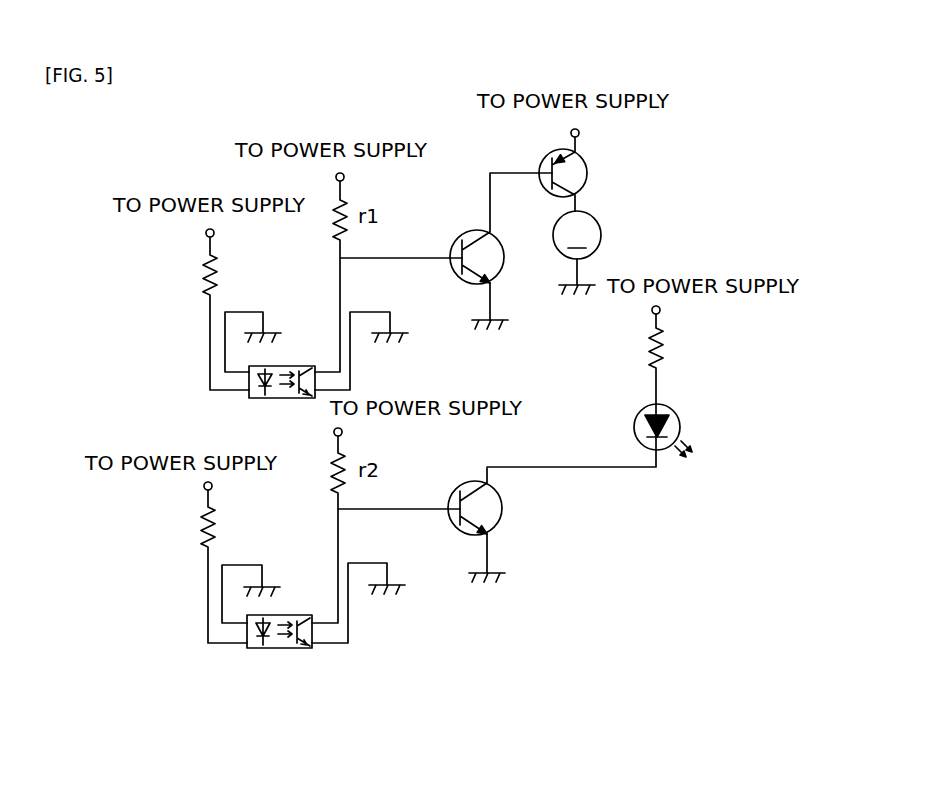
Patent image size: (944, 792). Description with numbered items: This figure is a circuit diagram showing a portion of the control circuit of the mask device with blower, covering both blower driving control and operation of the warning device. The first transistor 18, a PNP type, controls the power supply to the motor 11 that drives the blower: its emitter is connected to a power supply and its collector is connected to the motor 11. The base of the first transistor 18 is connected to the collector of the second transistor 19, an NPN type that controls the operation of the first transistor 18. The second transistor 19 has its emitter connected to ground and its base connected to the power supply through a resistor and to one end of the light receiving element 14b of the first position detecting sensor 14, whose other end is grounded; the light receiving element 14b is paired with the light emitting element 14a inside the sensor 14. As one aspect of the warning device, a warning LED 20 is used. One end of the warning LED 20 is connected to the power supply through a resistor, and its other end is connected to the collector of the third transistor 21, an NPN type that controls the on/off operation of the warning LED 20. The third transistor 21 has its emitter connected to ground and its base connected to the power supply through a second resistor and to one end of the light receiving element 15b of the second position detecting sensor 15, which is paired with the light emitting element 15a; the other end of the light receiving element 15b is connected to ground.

The motor 11 is at (602, 237).
The first position detecting sensor 14 is at (278, 375).
The light emitting element of first position detecting sensor 14a is at (270, 397).
The light receiving element of first position detecting sensor 14b is at (297, 397).
The second position detecting sensor 15 is at (272, 634).
The light emitting element of second position detecting sensor 15a is at (265, 650).
The light receiving element of second position detecting sensor 15b is at (293, 650).
The first transistor 18 is at (592, 170).
The second transistor 19 is at (467, 230).
The warning LED 20 is at (682, 428).
The third transistor 21 is at (500, 515).